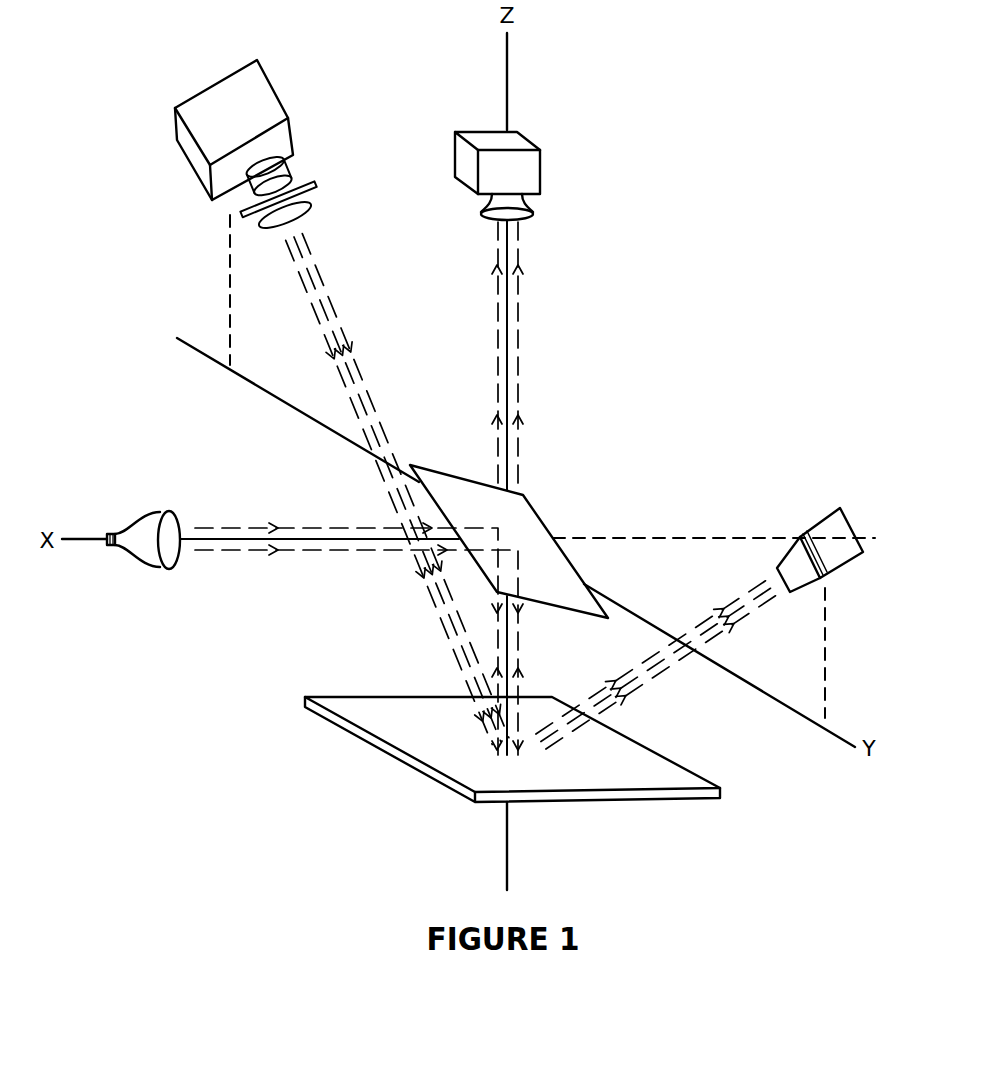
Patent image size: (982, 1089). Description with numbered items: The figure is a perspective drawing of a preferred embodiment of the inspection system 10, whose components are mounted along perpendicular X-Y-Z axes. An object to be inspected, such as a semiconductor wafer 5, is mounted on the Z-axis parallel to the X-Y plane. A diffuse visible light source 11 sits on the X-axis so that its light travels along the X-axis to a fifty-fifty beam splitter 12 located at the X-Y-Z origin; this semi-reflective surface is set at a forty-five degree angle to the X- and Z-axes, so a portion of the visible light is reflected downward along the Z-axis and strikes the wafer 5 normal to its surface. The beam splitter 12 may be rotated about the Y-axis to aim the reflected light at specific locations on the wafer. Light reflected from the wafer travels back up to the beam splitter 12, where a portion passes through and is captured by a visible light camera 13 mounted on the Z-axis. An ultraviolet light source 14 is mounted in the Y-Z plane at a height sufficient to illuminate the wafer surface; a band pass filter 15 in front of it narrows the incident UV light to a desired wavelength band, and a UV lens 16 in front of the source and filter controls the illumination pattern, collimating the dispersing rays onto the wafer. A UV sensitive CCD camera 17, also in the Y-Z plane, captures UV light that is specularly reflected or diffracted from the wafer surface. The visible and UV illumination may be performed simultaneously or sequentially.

The semiconductor wafer 5 is at (400, 763).
The inspection system 10 is at (715, 258).
The diffuse visible light source 11 is at (145, 517).
The beam splitter 12 is at (540, 512).
The visible light camera 13 is at (548, 154).
The ultraviolet light source 14 is at (277, 90).
The band pass filter 15 is at (303, 178).
The UV lens 16 is at (313, 207).
The UV sensitive CCD camera 17 is at (822, 520).